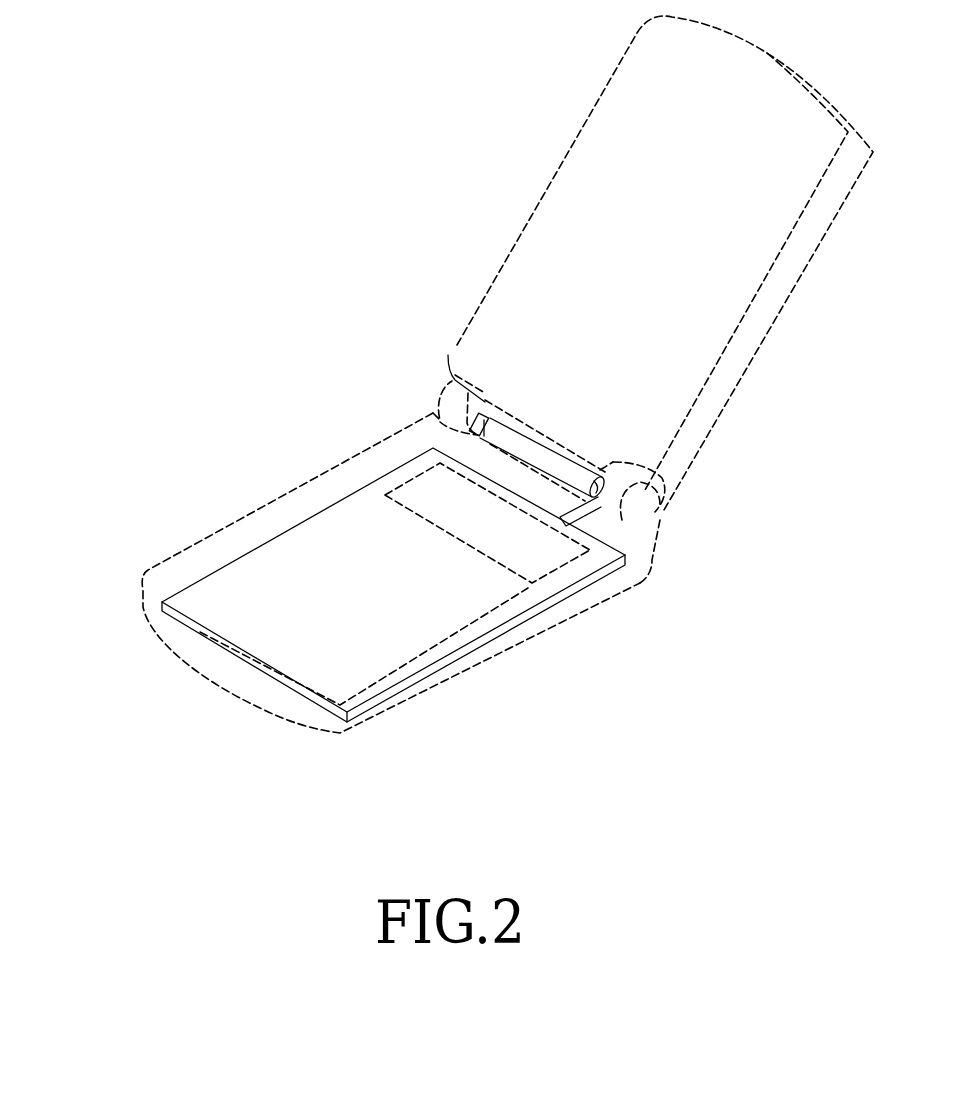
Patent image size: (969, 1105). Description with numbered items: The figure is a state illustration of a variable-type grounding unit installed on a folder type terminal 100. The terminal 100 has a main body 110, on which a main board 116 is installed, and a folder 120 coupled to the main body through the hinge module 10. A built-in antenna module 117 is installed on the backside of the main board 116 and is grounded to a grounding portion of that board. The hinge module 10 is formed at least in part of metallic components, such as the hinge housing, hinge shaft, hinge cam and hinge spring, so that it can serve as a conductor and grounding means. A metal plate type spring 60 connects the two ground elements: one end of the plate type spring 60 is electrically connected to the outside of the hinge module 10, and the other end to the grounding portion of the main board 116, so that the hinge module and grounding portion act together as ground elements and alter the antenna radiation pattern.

The terminal 100 is at (455, 379).
The main body 110 is at (163, 562).
The folder (flip cover) 120 is at (567, 155).
The main board 116 is at (223, 622).
The built-in antenna module 117 is at (527, 586).
The hinge module 10 is at (572, 458).
The plate type spring 60 is at (594, 511).